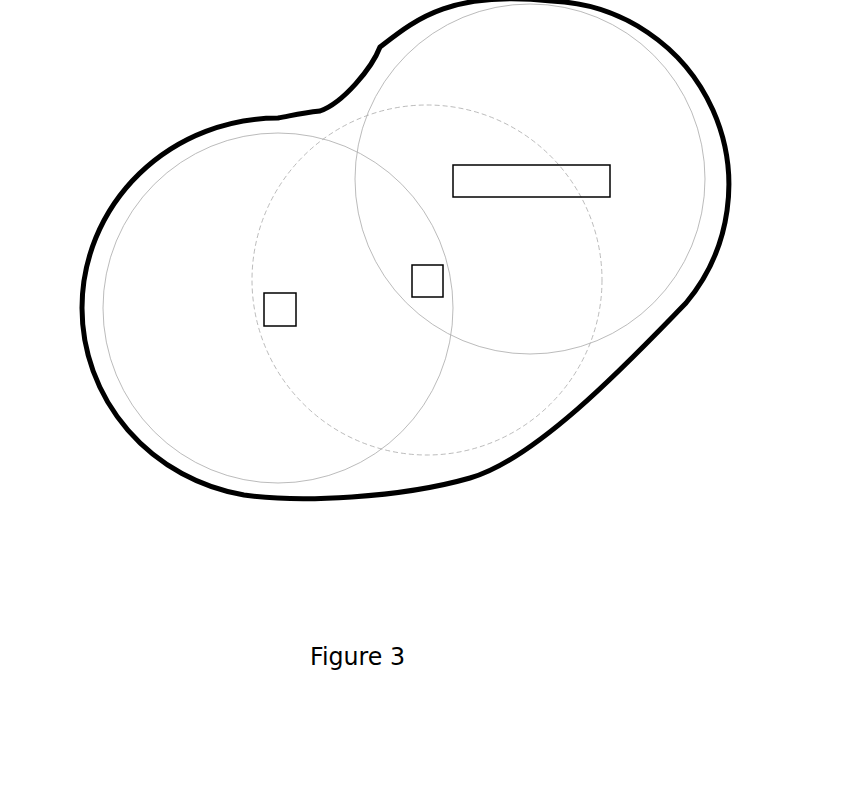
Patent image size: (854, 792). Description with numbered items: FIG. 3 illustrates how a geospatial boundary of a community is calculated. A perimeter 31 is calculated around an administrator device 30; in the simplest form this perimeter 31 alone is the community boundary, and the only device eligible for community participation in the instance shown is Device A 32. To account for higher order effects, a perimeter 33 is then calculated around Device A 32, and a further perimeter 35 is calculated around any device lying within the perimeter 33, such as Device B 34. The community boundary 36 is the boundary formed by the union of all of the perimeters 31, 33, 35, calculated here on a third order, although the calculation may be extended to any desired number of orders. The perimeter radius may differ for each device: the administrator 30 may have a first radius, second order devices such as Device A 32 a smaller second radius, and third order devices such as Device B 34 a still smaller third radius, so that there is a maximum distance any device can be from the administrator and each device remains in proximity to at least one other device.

The administrator device 30 is at (610, 181).
The perimeter 31 is at (705, 150).
The Device A 32 is at (443, 290).
The perimeter 33 is at (578, 362).
The Device B 34 is at (263, 312).
The perimeter 35 is at (148, 418).
The community boundary 36 is at (80, 330).